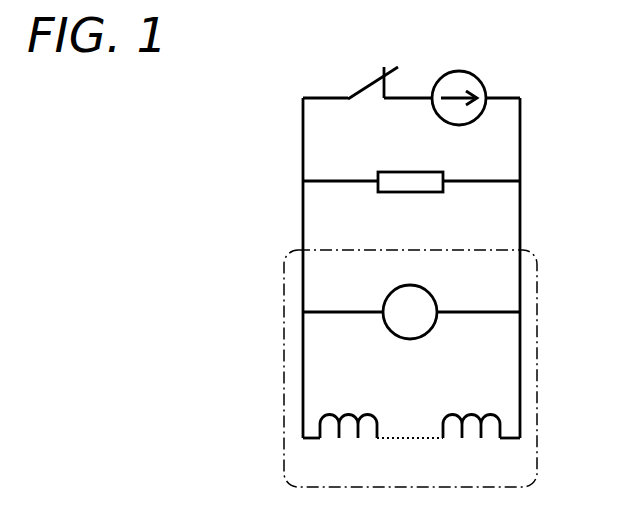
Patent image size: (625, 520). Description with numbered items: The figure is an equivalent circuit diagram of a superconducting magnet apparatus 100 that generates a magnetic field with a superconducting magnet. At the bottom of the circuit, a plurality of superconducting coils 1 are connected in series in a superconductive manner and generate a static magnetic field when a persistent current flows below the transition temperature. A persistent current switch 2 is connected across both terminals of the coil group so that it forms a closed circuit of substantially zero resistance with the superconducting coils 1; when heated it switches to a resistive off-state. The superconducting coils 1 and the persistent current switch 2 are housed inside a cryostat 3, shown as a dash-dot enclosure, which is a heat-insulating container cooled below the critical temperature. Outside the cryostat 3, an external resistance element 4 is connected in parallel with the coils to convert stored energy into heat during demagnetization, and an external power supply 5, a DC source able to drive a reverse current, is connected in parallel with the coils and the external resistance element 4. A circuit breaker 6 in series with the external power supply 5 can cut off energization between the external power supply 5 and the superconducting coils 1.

The superconducting magnet apparatus 100 is at (376, 361).
The superconducting coils 1 is at (487, 414).
The persistent current switch 2 is at (430, 291).
The cryostat 3 is at (438, 368).
The external resistance element 4 is at (430, 172).
The external power supply 5 is at (469, 77).
The circuit breaker 6 is at (360, 70).